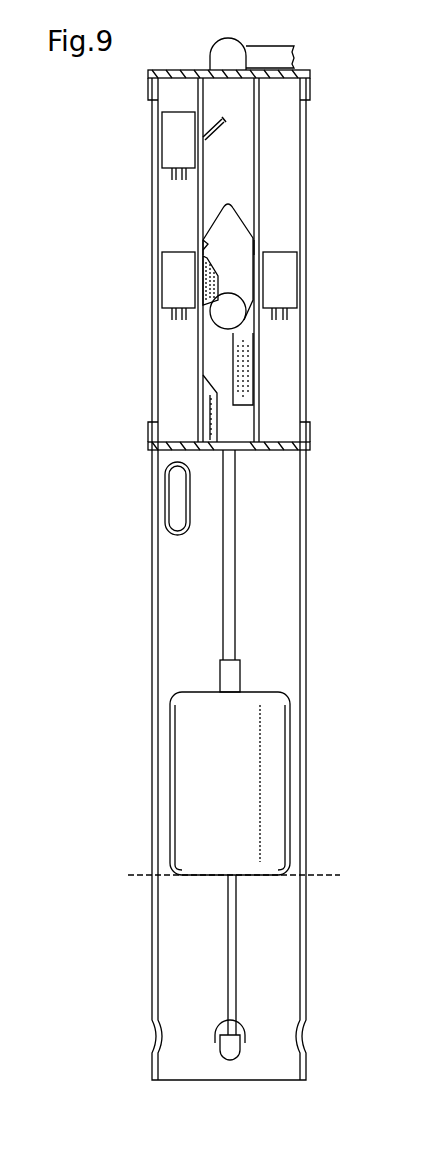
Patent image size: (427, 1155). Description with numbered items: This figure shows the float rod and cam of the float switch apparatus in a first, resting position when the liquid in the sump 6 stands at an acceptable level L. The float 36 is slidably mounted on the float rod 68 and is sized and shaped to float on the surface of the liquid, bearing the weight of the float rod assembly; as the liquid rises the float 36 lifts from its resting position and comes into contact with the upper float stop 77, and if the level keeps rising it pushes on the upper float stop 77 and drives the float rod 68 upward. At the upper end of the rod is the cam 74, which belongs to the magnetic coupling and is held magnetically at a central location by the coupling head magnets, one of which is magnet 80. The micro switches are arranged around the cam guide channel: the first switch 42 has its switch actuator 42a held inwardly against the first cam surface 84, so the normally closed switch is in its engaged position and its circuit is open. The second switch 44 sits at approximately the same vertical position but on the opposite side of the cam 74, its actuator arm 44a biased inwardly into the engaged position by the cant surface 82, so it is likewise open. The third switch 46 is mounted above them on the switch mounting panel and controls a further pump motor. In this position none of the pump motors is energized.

The sump 6 is at (277, 936).
The float 36 is at (263, 792).
The first switch 42 is at (162, 283).
The switch actuator 42a is at (200, 246).
The second switch 44 is at (300, 278).
The actuator arm 44a is at (260, 246).
The third switch 46 is at (160, 146).
The float rod 68 is at (247, 553).
The cam 74 is at (233, 226).
The upper float stop 77 is at (230, 684).
The coupling head magnet 80 is at (215, 310).
The cant surface 82 is at (258, 335).
The first cam surface 84 is at (205, 241).
The liquid level L is at (243, 874).